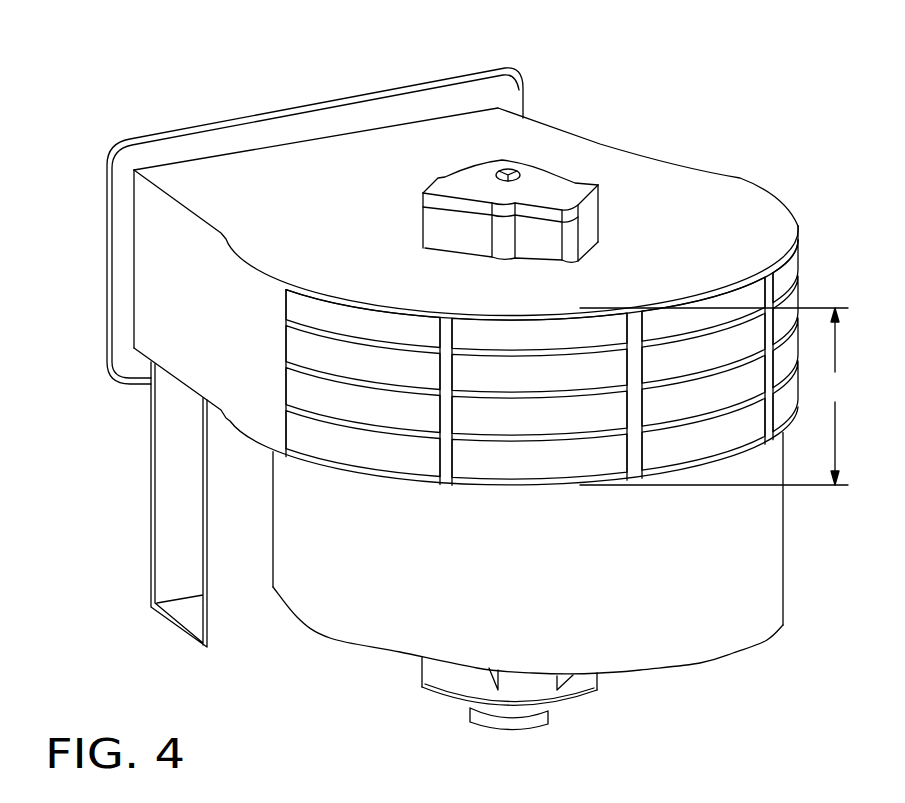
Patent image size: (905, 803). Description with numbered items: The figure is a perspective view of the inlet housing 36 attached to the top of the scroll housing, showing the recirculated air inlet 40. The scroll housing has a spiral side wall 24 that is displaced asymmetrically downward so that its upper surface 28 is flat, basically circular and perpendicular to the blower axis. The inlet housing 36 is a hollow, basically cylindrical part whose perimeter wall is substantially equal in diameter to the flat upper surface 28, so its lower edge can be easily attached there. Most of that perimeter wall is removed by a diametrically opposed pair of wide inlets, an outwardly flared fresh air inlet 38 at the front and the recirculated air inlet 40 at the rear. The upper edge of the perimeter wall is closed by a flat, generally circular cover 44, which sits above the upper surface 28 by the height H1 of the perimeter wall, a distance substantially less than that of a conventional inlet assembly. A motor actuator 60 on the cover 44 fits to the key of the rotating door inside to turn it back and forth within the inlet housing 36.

The spiral side wall 24 is at (748, 601).
The upper surface 28 is at (782, 566).
The inlet housing 36 is at (690, 160).
The fresh air inlet 38 is at (442, 80).
The recirculated air inlet 40 is at (724, 285).
The cover 44 is at (725, 197).
The motor actuator 60 is at (537, 177).
The height of the perimeter wall H1 is at (716, 396).